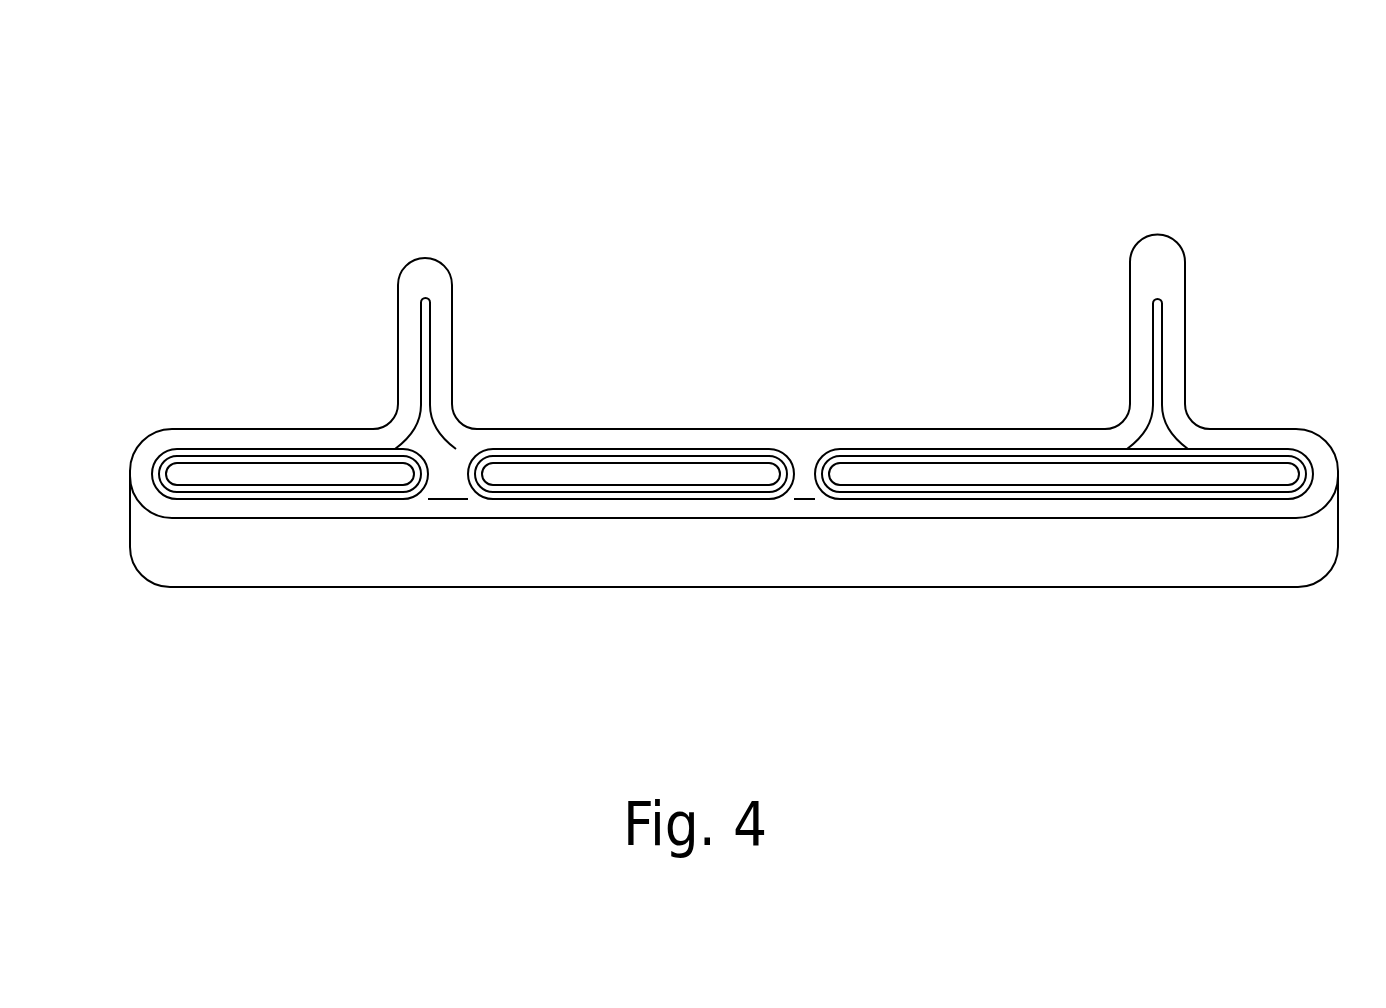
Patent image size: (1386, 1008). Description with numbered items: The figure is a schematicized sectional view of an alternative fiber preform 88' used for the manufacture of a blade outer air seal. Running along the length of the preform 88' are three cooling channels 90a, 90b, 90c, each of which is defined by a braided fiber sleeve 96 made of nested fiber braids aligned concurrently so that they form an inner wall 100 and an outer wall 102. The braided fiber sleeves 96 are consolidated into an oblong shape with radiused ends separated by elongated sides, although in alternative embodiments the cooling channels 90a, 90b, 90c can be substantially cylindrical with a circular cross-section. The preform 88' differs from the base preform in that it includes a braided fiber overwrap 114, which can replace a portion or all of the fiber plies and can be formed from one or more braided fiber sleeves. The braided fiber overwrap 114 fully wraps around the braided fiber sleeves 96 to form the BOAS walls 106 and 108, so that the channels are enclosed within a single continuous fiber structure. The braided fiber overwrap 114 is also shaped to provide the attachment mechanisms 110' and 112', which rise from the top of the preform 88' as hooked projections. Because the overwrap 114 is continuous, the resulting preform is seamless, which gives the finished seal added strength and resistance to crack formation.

The fiber preform 88' is at (734, 396).
The cooling channel 90a is at (370, 474).
The cooling channel 90b is at (541, 470).
The cooling channel 90c is at (936, 473).
The braided fiber sleeve 96 is at (1238, 455).
The inner wall 100 is at (626, 469).
The outer wall 102 is at (688, 446).
The BOAS wall 106 is at (952, 558).
The BOAS wall 108 is at (783, 428).
The attachment mechanism 110' is at (455, 353).
The attachment mechanism 112' is at (1204, 355).
The braided fiber overwrap 114 is at (1168, 238).